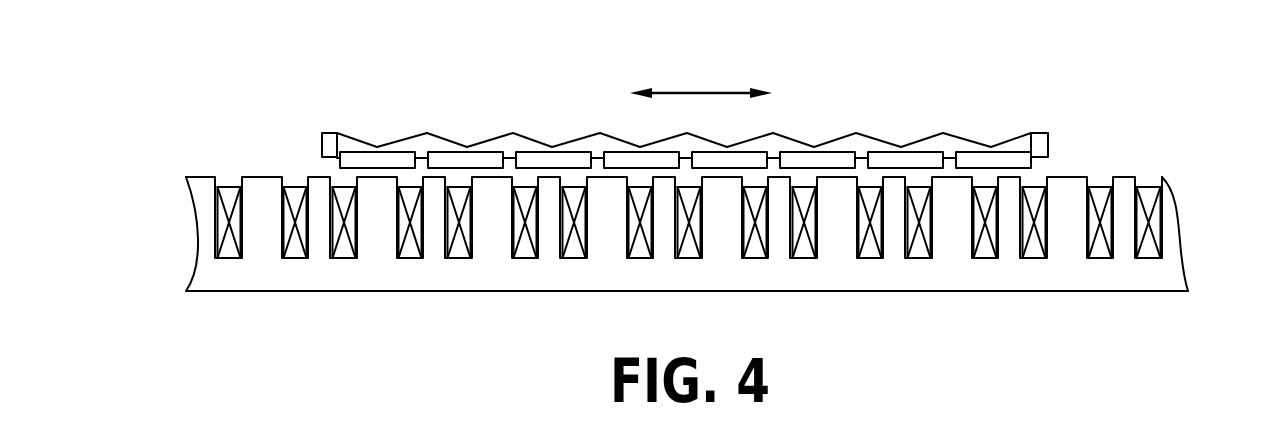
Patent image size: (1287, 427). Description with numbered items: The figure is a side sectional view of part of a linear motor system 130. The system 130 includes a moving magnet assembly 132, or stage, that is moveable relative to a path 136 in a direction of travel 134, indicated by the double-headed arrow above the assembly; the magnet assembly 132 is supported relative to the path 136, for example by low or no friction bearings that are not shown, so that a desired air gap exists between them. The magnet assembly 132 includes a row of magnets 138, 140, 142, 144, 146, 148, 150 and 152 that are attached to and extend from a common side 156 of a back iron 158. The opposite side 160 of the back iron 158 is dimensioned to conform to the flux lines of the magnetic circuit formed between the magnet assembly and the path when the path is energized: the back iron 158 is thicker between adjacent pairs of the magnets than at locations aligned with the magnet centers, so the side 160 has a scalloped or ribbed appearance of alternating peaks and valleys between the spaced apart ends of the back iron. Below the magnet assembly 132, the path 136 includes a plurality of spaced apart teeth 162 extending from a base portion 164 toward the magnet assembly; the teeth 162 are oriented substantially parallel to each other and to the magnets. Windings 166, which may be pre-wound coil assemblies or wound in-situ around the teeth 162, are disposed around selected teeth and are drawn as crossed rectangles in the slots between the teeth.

The linear motor system 130 is at (1160, 93).
The moving magnet assembly 132 is at (1050, 140).
The direction of travel 134 is at (697, 93).
The path 136 is at (1187, 232).
The magnet 138 is at (380, 160).
The magnet 140 is at (467, 160).
The magnet 142 is at (553, 160).
The magnet 144 is at (641, 160).
The magnet 146 is at (729, 160).
The magnet 148 is at (817, 160).
The magnet 150 is at (905, 160).
The magnet 152 is at (993, 160).
The common side of back iron 156 is at (1046, 157).
The back iron 158 is at (320, 142).
The opposite side of back iron 160 is at (336, 133).
The teeth 162 is at (327, 177).
The base portion 164 is at (700, 278).
The windings 166 is at (223, 258).